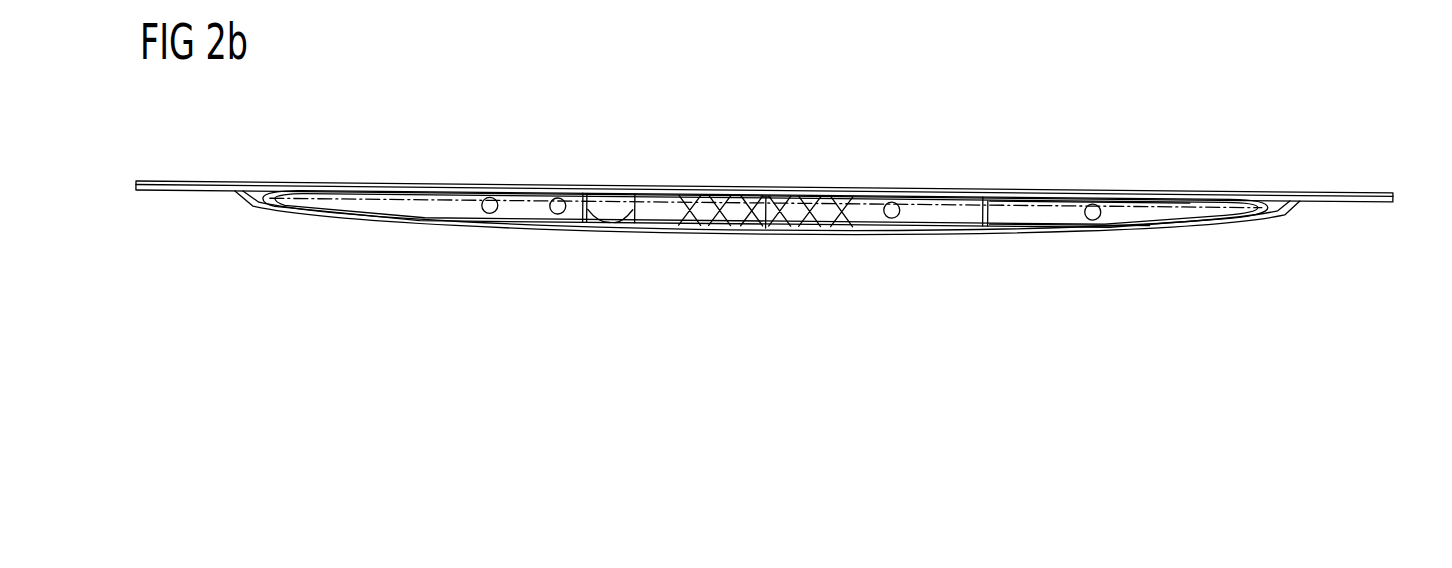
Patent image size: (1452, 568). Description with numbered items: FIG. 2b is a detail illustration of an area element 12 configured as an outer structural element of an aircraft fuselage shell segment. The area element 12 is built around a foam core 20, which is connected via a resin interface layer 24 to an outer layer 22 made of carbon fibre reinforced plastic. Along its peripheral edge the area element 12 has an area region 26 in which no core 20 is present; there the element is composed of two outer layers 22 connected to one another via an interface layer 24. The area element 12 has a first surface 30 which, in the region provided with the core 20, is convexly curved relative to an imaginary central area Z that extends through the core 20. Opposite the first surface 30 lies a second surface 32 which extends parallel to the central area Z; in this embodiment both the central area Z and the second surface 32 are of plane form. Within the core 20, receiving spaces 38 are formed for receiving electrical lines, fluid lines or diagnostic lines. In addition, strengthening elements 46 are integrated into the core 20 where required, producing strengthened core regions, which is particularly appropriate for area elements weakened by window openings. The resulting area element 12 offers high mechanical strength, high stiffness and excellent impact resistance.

The area element 12 is at (1266, 127).
The foam core 20 is at (1035, 233).
The outer layer 22 is at (883, 190).
The resin interface layer 24 is at (720, 188).
The area region 26 is at (190, 182).
The first surface 30 is at (640, 237).
The second surface 32 is at (622, 186).
The receiving space 38 is at (490, 234).
The strengthening element 46 is at (963, 190).
The central area Z is at (342, 200).